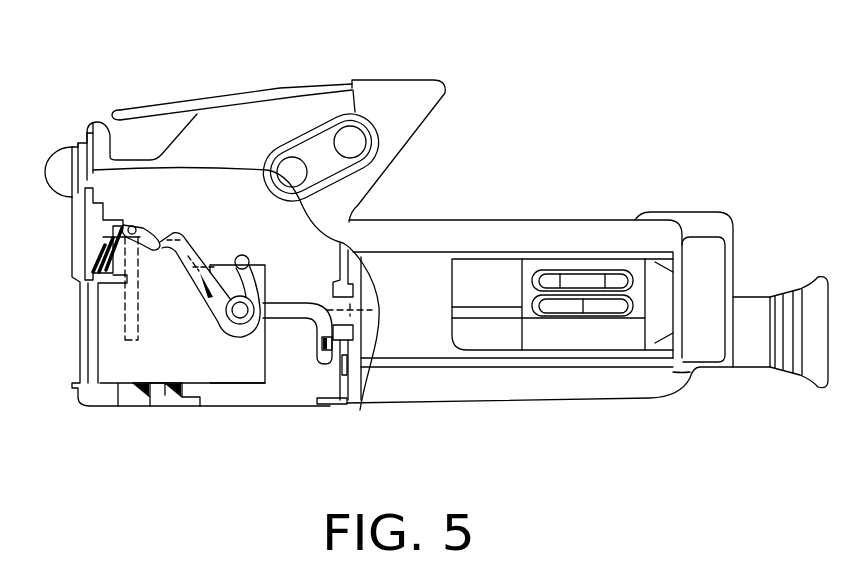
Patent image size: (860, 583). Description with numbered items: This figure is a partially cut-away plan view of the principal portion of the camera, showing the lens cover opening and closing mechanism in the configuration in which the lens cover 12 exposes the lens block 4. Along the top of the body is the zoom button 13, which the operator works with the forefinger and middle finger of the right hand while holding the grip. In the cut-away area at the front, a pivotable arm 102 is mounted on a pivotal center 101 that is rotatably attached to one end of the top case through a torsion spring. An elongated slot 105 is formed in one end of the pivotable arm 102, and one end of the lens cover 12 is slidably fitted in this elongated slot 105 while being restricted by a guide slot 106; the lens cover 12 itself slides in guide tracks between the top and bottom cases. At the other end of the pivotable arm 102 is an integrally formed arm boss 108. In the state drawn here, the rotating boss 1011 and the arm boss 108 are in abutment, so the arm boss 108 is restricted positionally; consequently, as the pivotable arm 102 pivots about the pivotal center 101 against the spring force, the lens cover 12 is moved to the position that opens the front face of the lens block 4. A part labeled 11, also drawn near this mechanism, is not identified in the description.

The lens block 4 is at (210, 365).
The bracket 11 is at (358, 288).
The lens cover 12 is at (87, 226).
The zoom button 13 is at (422, 80).
The pivotal center 101 is at (228, 313).
The pivotable arm 102 is at (290, 265).
The elongated slot 105 is at (148, 226).
The guide slot 106 is at (125, 323).
The arm boss 108 is at (312, 362).
The rotating boss 1011 is at (339, 358).